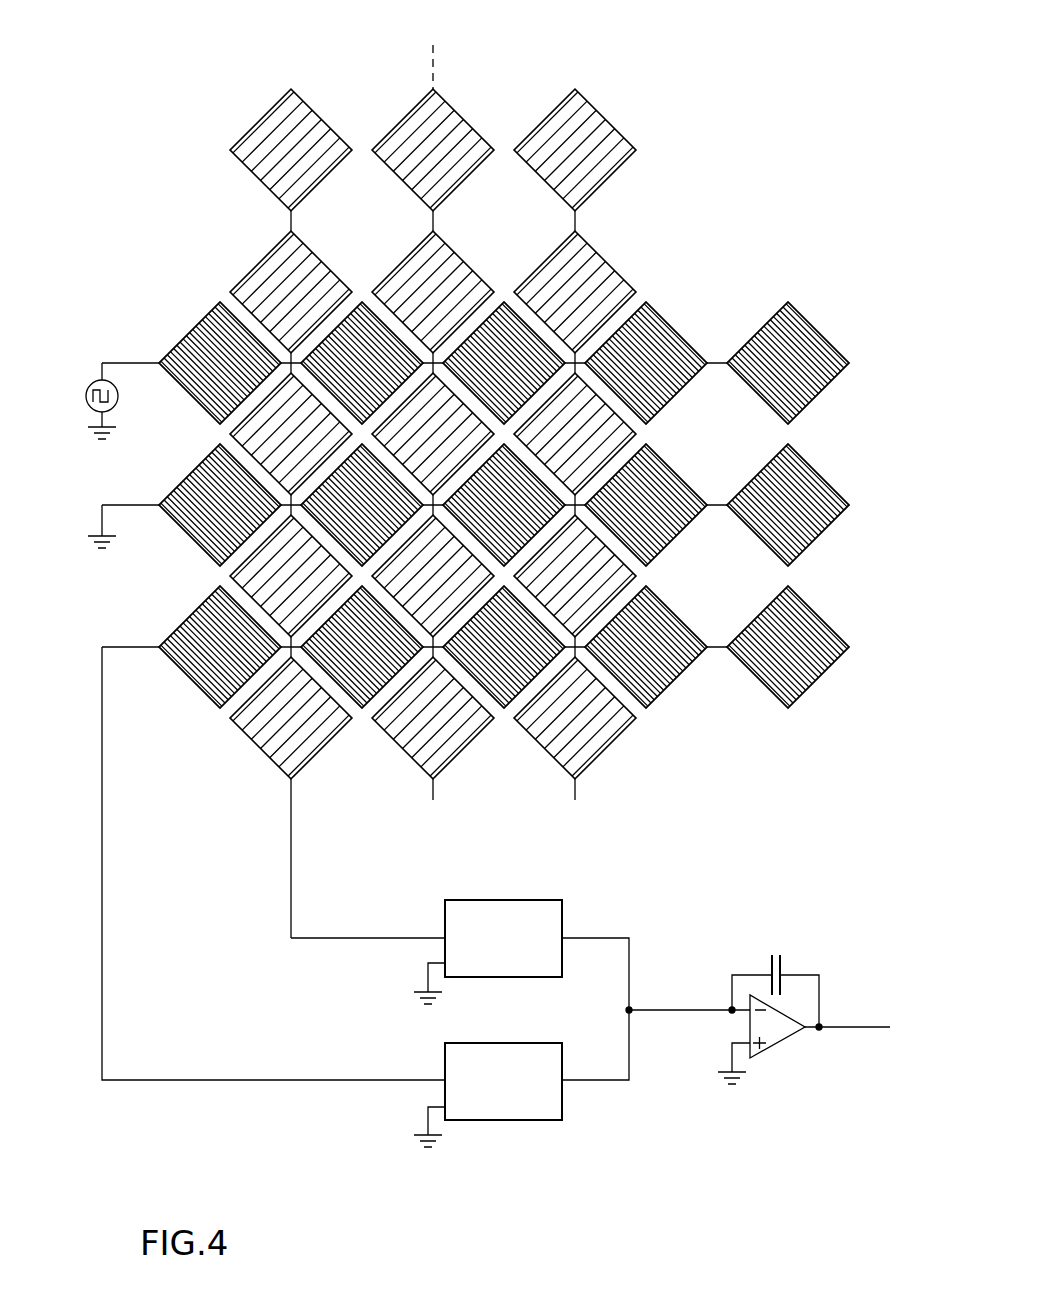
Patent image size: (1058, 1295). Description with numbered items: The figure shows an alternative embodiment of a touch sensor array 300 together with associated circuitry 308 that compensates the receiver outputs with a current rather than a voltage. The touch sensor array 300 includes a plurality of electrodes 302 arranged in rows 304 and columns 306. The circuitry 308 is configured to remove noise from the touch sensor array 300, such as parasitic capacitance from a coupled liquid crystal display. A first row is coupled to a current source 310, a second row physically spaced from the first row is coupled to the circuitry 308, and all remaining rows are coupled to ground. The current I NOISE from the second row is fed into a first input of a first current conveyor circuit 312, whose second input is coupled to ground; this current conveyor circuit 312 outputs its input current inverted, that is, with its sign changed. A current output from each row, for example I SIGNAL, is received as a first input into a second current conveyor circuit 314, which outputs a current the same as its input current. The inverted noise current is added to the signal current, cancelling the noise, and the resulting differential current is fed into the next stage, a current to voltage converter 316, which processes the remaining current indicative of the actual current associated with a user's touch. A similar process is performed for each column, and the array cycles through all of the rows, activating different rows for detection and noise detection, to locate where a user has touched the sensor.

The touch sensor array 300 is at (742, 186).
The electrodes 302 is at (668, 318).
The rows 304 is at (893, 305).
The columns 306 is at (635, 50).
The circuitry 308 is at (738, 858).
The current source 310 is at (88, 383).
The first current conveyor circuit 312 is at (508, 1120).
The second current conveyor circuit 314 is at (508, 900).
The current to voltage converter 316 is at (786, 966).